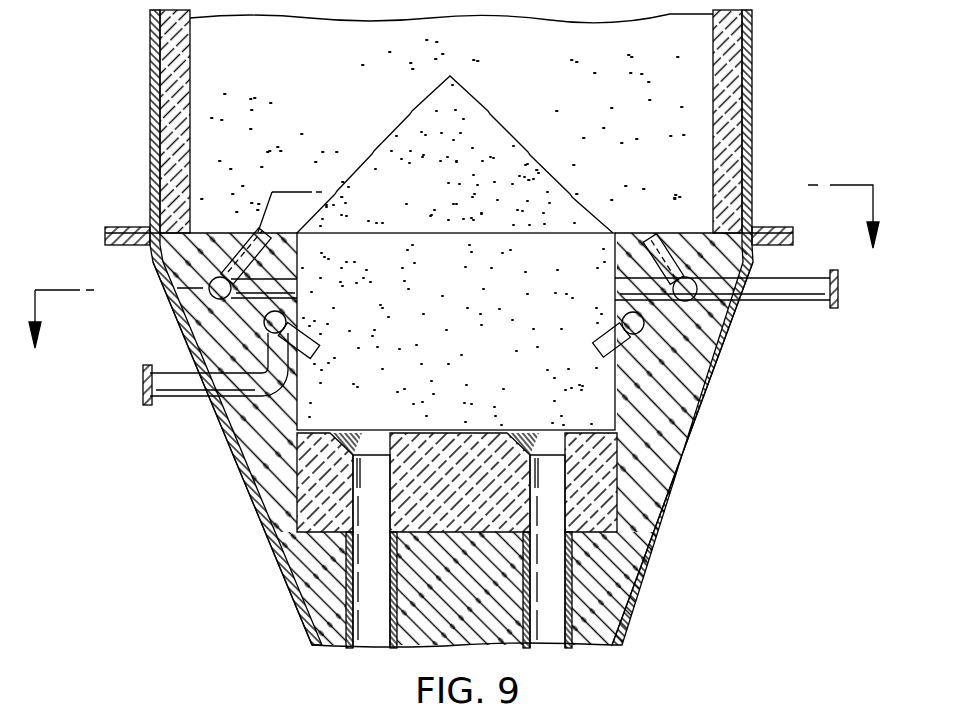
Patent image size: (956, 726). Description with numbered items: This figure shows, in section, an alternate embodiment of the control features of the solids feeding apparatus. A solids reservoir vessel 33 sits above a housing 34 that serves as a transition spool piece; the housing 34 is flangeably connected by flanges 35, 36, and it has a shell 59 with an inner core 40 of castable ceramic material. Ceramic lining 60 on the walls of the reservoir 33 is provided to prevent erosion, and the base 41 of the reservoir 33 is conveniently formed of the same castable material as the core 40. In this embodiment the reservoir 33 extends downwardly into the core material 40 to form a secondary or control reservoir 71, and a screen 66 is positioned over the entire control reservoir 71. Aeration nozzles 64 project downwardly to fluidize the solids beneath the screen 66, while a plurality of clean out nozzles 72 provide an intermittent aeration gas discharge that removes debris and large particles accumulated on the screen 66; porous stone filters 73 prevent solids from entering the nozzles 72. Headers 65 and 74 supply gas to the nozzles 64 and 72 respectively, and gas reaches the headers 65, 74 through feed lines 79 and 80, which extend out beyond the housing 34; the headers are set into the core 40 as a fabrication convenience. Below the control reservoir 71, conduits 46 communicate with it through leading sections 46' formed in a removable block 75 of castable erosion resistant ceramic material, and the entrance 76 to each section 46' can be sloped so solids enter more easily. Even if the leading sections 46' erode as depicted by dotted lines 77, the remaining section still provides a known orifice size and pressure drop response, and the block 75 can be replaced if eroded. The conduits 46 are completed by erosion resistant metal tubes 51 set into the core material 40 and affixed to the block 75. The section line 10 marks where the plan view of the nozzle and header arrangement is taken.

The steel shell 59 is at (150, 142).
The ceramic lining 60 is at (168, 100).
The flange 35 is at (122, 227).
The flange 36 is at (110, 246).
The solids reservoir vessel 33 is at (306, 139).
The screen 66 is at (527, 153).
The header 65 is at (264, 322).
The base of the reservoir 41 is at (646, 233).
The erosion resistant metal tubes 51 is at (350, 603).
The inner core 40 is at (260, 463).
The housing 34 is at (703, 418).
The control reservoir 71 is at (474, 359).
The block 75 is at (603, 491).
The entrance 76 is at (393, 447).
The dotted lines 77 is at (496, 447).
The conduits 46 is at (457, 551).
The leading section 46' is at (643, 580).
The clean out nozzles 72 is at (222, 238).
The porous stone filters 73 is at (259, 234).
The aeration nozzles 64 is at (303, 340).
The feed line 79 is at (172, 400).
The header 74 is at (703, 302).
The feed line 80 is at (812, 306).
The section line 10 is at (444, 288).